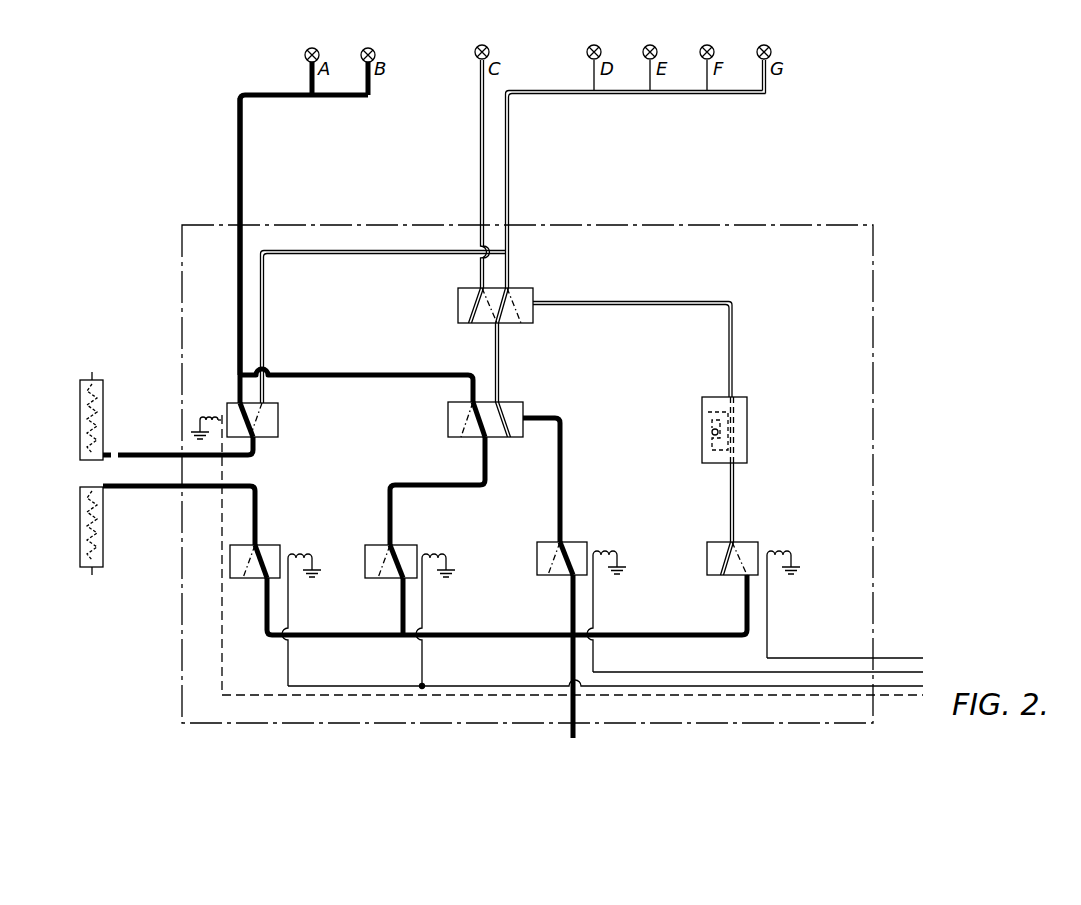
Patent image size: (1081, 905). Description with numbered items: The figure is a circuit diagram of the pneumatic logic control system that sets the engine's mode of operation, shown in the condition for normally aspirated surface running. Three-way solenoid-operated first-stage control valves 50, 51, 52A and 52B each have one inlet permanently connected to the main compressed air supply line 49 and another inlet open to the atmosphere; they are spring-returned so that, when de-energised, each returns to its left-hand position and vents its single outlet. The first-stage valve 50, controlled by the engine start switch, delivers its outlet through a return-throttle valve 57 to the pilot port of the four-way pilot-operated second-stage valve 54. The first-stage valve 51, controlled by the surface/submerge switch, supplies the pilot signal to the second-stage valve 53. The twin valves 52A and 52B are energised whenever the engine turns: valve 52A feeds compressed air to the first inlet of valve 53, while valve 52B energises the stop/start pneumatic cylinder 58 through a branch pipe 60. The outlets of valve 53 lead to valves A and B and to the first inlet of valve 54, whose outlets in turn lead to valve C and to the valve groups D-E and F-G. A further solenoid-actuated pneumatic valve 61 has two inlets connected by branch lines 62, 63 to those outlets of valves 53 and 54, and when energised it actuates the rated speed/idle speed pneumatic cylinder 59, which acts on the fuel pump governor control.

The main compressed air supply line 49 is at (578, 705).
The first-stage control valve 50 is at (748, 543).
The first-stage control valve 51 is at (578, 543).
The first-stage control valve 52A is at (405, 548).
The first-stage control valve 52B is at (275, 548).
The second-stage valve 53 is at (518, 412).
The second-stage valve 54 is at (533, 318).
The return-throttle valve 57 is at (748, 413).
The pneumatic cylinder 58 is at (103, 523).
The pneumatic cylinder 59 is at (103, 418).
The branch pipe 60 is at (252, 482).
The solenoid-actuated pneumatic valve 61 is at (280, 422).
The branch line 62 is at (240, 396).
The branch line 63 is at (262, 337).